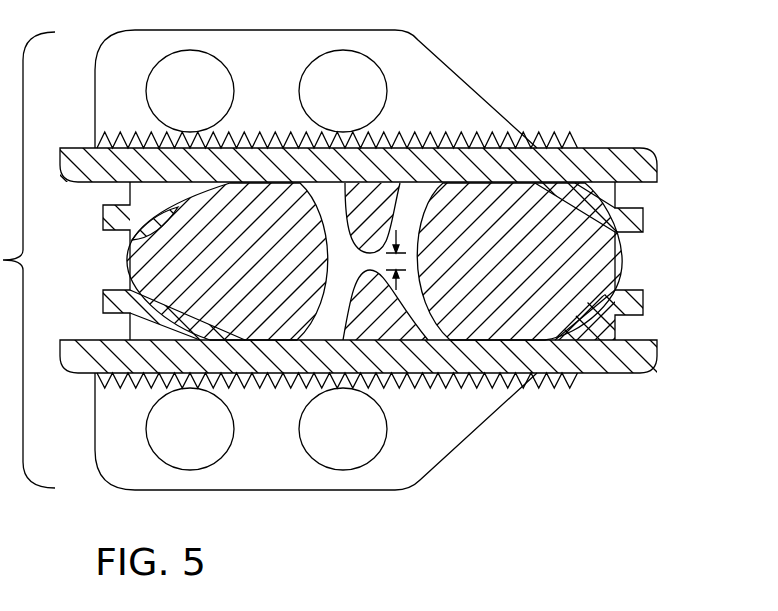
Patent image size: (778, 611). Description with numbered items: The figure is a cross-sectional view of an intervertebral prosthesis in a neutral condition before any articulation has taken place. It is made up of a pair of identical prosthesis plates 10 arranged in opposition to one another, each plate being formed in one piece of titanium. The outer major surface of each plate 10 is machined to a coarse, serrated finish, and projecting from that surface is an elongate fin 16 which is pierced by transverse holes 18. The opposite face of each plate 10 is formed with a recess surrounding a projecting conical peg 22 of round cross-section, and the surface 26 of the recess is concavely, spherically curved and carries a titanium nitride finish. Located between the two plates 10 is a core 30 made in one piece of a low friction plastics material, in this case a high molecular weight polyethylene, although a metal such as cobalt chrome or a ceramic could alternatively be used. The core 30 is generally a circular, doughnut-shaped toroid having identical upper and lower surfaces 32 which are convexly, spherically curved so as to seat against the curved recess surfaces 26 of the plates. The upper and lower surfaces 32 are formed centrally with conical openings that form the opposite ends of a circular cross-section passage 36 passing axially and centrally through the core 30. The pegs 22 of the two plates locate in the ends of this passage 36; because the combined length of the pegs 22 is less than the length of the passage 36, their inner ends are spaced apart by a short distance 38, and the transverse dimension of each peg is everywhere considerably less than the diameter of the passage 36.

The prosthesis plate 10 is at (629, 125).
The elongate fin 16 is at (423, 72).
The transverse holes 18 is at (307, 90).
The conical peg 22 is at (380, 210).
The surface of the recess 26 is at (140, 243).
The core 30 is at (640, 283).
The upper and lower surfaces 32 is at (238, 150).
The passage 36 is at (275, 358).
The short distance 38 is at (397, 258).